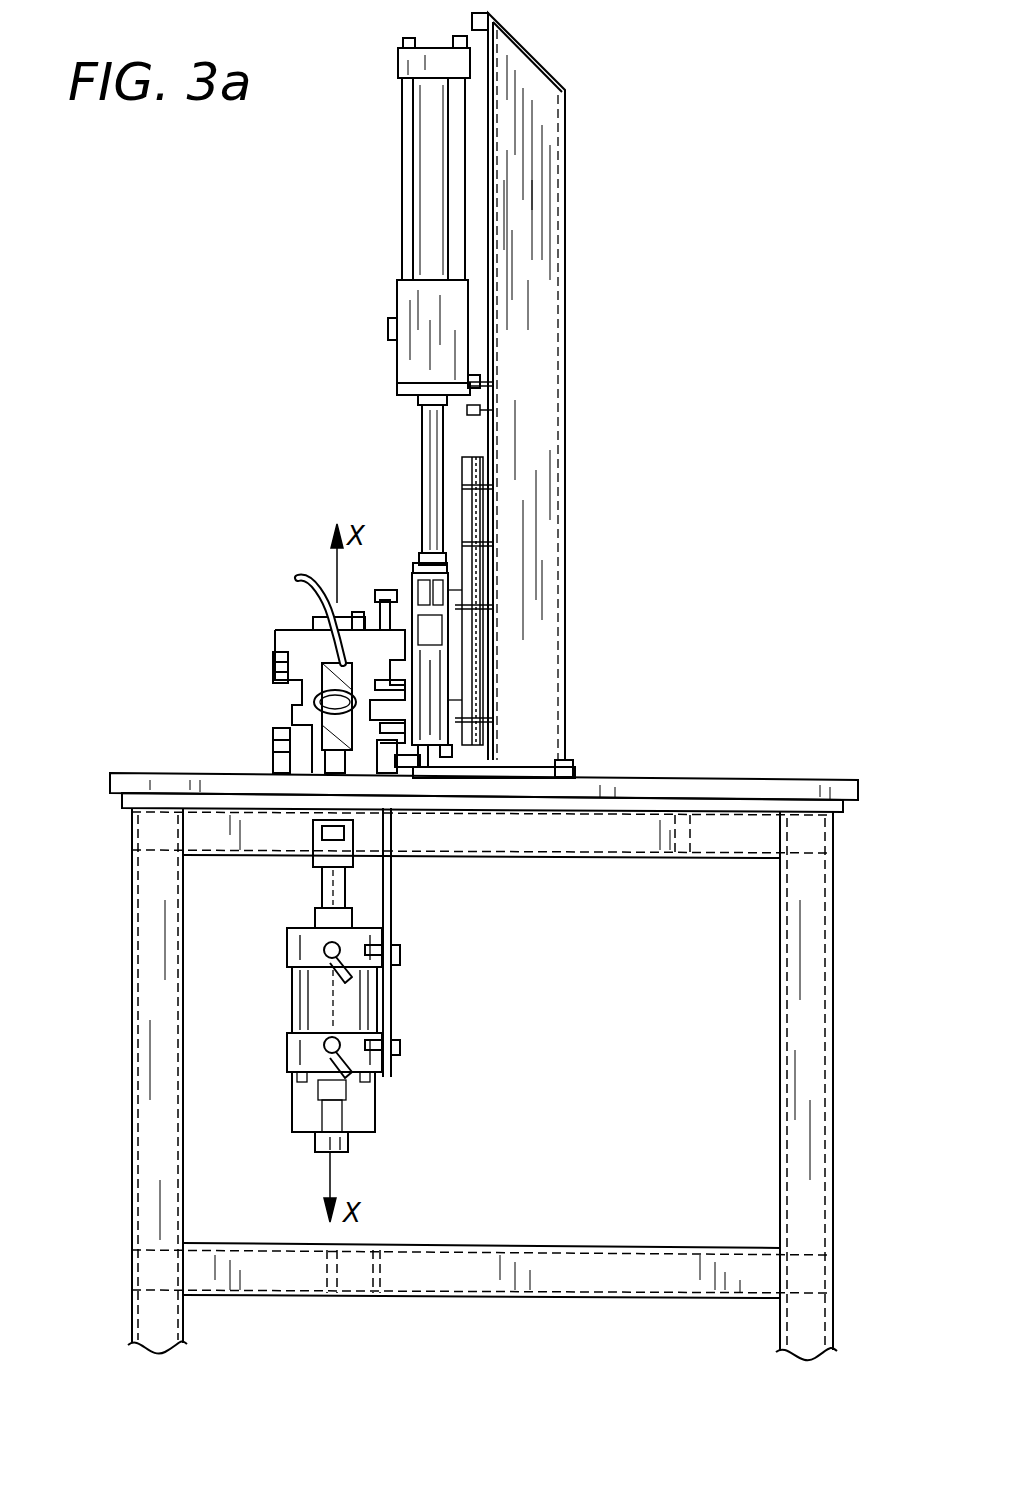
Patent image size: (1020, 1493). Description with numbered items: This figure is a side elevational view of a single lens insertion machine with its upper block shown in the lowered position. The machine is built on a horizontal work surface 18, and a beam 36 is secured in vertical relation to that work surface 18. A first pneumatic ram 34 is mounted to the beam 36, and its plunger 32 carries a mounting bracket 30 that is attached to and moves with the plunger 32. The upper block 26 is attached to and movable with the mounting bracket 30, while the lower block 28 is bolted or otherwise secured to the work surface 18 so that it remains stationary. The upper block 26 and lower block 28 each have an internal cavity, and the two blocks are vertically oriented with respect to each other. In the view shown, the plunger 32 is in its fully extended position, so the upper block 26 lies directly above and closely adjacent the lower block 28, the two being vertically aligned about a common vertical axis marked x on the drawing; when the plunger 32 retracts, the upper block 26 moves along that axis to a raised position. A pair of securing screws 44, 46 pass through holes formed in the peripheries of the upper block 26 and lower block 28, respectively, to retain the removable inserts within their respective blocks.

The work surface 18 is at (685, 788).
The upper block 26 is at (297, 632).
The lower block 28 is at (270, 765).
The mounting bracket 30 is at (422, 650).
The plunger 32 is at (428, 443).
The first pneumatic ram 34 is at (418, 313).
The beam 36 is at (543, 383).
The securing screw 44 is at (275, 665).
The securing screw 46 is at (275, 743).